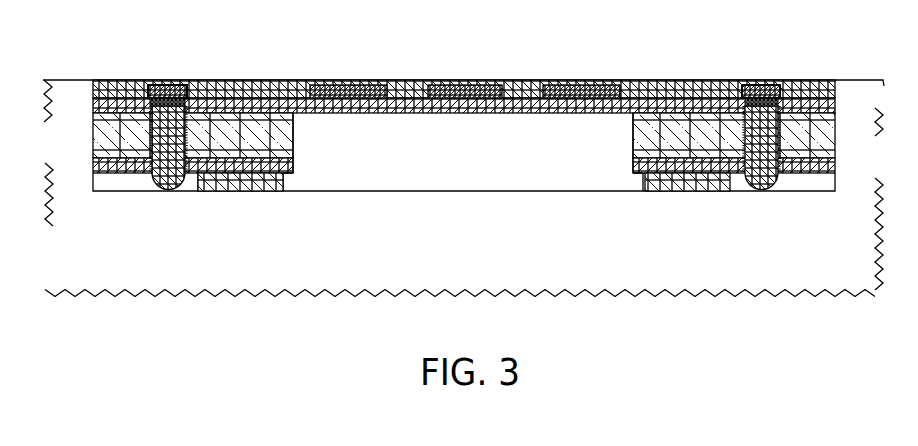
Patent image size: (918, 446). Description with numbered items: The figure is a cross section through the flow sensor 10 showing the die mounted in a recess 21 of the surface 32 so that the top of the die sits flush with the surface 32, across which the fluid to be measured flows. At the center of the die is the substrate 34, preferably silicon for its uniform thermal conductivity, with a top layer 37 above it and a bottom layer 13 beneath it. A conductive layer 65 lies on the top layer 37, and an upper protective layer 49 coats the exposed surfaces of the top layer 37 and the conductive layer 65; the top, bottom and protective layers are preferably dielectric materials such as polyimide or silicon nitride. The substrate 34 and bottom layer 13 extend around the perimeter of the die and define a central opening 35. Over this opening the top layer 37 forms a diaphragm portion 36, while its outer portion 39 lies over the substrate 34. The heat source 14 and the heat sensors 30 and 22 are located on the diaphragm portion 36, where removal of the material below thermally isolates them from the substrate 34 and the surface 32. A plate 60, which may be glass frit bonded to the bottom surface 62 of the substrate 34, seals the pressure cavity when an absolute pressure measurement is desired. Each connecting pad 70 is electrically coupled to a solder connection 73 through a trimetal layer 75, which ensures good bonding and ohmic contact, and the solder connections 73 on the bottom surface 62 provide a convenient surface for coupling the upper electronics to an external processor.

The flow sensor 10 is at (456, 188).
The bottom layer 13 is at (831, 166).
The heat source 14 is at (467, 84).
The recess 21 is at (425, 189).
The heat sensor 22 is at (615, 84).
The heat sensor 30 is at (333, 84).
The surface 32 is at (51, 80).
The substrate 34 is at (96, 132).
The central opening 35 is at (348, 214).
The diaphragm portion 36 is at (530, 84).
The top layer 37 is at (416, 84).
The outer portion 39 is at (123, 100).
The upper protective layer 49 is at (227, 86).
The plate 60 is at (677, 191).
The bottom surface 62 is at (113, 178).
The conductive layer 65 is at (84, 91).
The connecting pad 70 is at (168, 88).
The solder connection 73 is at (171, 189).
The trimetal layer 75 is at (184, 104).